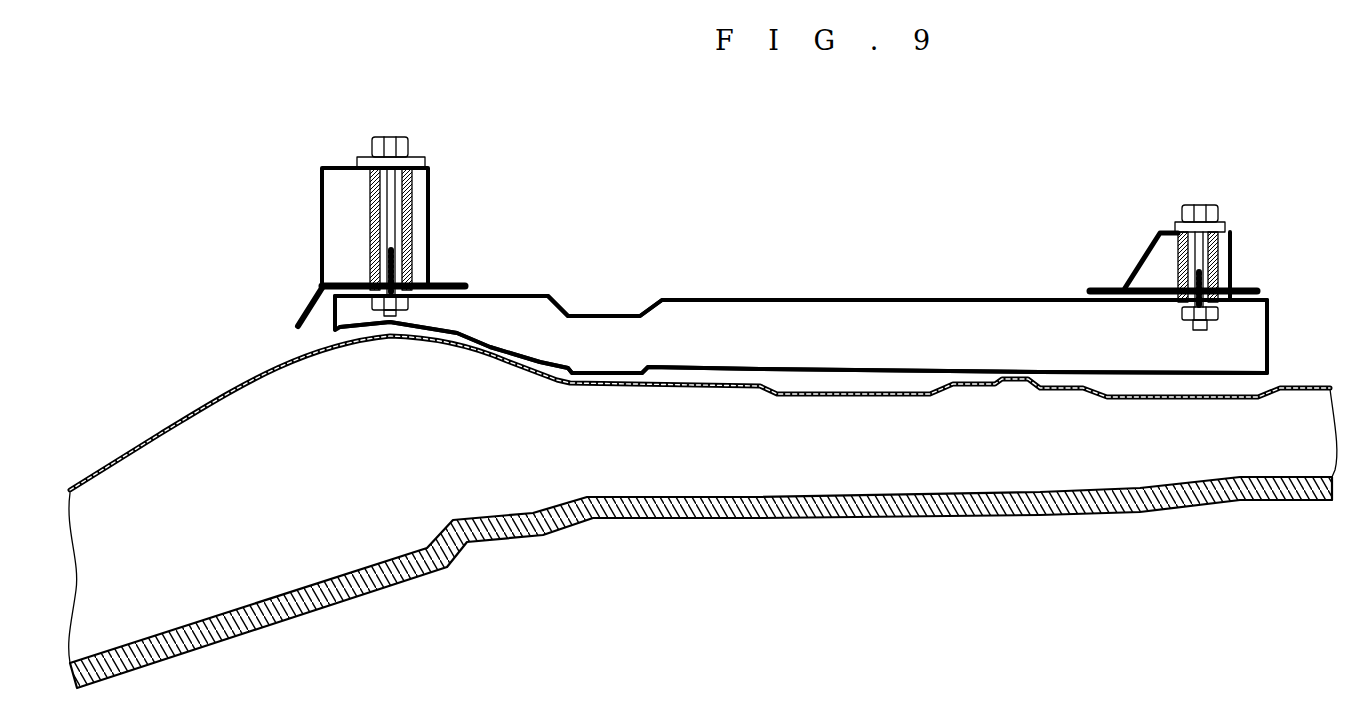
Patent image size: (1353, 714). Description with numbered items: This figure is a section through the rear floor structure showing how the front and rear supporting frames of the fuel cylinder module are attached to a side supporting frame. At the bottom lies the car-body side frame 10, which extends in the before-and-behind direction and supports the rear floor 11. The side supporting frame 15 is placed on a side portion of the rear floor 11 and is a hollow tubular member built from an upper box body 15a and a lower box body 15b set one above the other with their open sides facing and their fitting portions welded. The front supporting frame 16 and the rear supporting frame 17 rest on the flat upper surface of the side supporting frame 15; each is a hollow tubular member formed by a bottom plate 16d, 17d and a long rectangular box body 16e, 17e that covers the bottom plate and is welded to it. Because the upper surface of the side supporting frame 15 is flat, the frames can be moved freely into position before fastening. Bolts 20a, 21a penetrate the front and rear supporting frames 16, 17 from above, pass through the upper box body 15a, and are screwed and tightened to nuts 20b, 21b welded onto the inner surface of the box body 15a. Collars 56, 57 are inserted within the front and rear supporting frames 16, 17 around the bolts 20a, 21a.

The car-body side frame 10 is at (832, 520).
The rear floor 11 is at (810, 397).
The side supporting frame 15 is at (787, 277).
The upper box body 15a is at (860, 298).
The lower box body 15b is at (873, 367).
The front supporting frame 16 is at (326, 247).
The bottom plate 16d is at (347, 283).
The box body 16e is at (320, 210).
The rear supporting frame 17 is at (1130, 245).
The bottom plate 17d is at (1153, 283).
The box body 17e is at (1157, 240).
The bolt 20a is at (388, 137).
The nut 20b is at (407, 305).
The bolt 21a is at (1195, 205).
The nut 21b is at (1180, 310).
The collar 56 is at (408, 232).
The collar 57 is at (1225, 255).